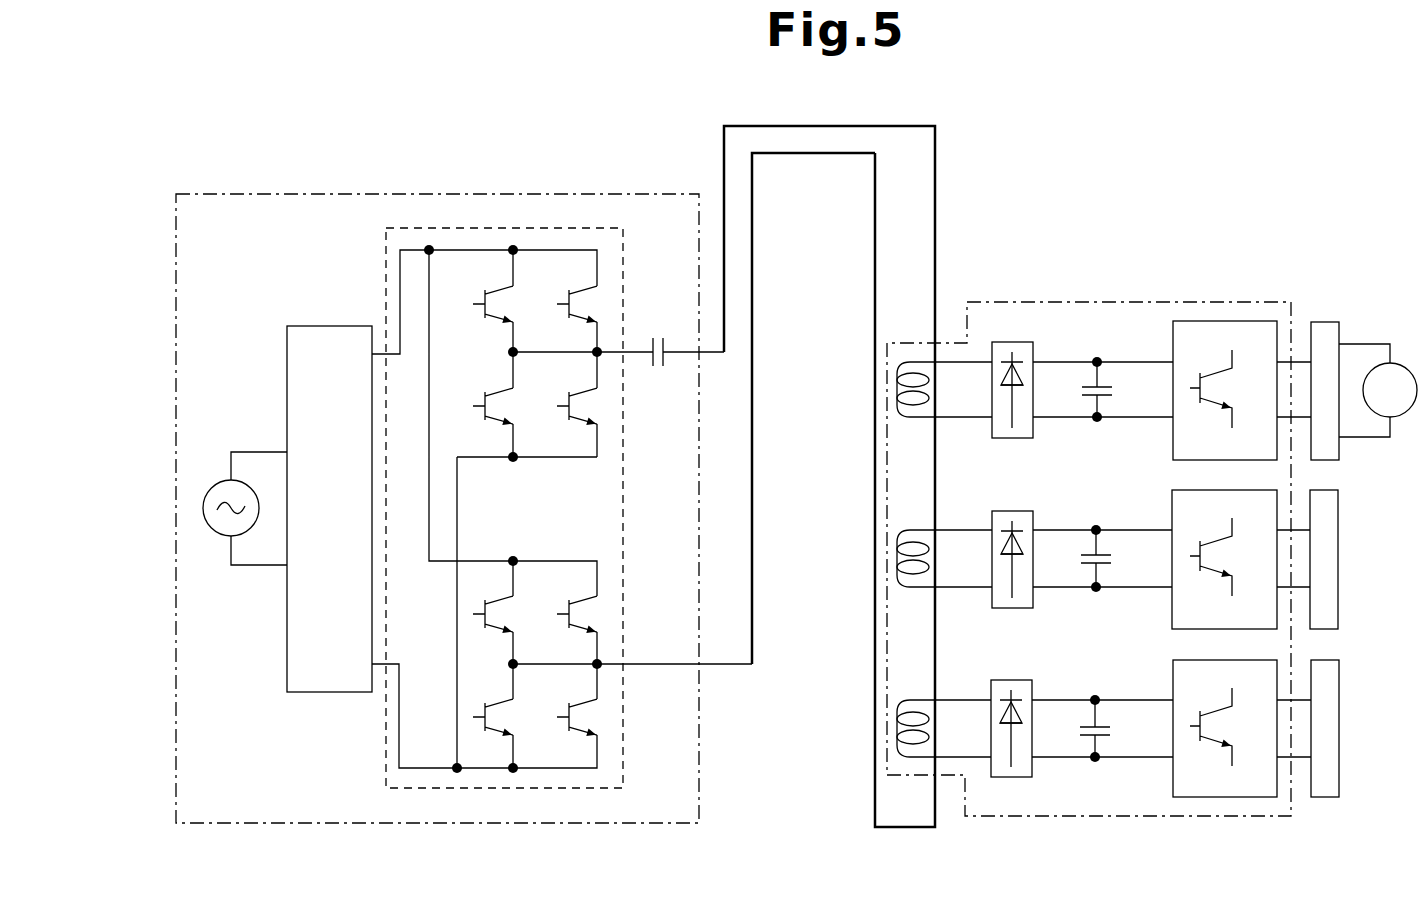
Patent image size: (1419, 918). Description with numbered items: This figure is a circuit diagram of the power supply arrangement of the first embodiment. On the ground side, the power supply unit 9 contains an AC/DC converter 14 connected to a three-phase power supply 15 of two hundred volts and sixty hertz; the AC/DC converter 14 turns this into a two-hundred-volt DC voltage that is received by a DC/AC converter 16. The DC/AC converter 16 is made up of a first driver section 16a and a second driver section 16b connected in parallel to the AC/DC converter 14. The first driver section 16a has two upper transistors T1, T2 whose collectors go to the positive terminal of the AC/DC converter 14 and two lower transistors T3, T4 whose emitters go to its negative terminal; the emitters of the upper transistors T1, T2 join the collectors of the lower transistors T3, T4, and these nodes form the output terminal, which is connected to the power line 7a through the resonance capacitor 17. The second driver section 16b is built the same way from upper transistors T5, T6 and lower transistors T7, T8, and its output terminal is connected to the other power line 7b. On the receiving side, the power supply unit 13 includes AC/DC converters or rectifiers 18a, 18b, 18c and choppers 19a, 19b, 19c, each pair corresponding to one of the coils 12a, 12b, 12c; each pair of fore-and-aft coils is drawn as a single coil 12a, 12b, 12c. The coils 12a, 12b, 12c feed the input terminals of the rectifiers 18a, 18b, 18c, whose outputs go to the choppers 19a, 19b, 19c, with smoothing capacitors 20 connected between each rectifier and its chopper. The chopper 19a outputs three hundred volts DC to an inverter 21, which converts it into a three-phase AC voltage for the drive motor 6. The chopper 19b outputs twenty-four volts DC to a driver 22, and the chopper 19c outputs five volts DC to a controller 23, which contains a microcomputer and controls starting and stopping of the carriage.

The power supply unit 9 is at (424, 192).
The AC/DC converter 14 is at (312, 692).
The 3-phase power supply 15 is at (221, 530).
The DC/AC converter 16 is at (528, 522).
The first driver section 16a is at (516, 390).
The second driver section 16b is at (526, 620).
The upper transistor T1 is at (495, 290).
The upper transistor T2 is at (579, 290).
The lower transistor T3 is at (489, 392).
The lower transistor T4 is at (573, 392).
The upper transistor T5 is at (505, 600).
The upper transistor T6 is at (571, 600).
The lower transistor T7 is at (494, 702).
The lower transistor T8 is at (572, 703).
The resonance capacitor 17 is at (666, 350).
The power line 7a is at (935, 196).
The power line 7b is at (875, 218).
The power supply unit 13 is at (1100, 294).
The coil 12a is at (892, 389).
The coil 12b is at (892, 557).
The coil 12c is at (892, 727).
The AC/DC converter (rectifier) 18a is at (992, 430).
The AC/DC converter (rectifier) 18b is at (992, 600).
The AC/DC converter (rectifier) 18c is at (998, 778).
The smoothing capacitor 20 is at (1104, 386).
The chopper 19a is at (1176, 432).
The chopper 19b is at (1174, 602).
The chopper 19c is at (1174, 772).
The inverter 21 is at (1323, 328).
The driver 22 is at (1338, 580).
The controller 23 is at (1339, 752).
The drive motor 6 is at (1398, 366).